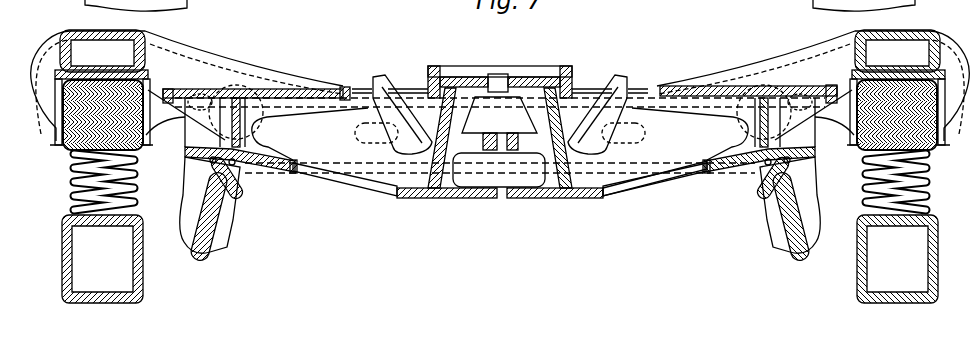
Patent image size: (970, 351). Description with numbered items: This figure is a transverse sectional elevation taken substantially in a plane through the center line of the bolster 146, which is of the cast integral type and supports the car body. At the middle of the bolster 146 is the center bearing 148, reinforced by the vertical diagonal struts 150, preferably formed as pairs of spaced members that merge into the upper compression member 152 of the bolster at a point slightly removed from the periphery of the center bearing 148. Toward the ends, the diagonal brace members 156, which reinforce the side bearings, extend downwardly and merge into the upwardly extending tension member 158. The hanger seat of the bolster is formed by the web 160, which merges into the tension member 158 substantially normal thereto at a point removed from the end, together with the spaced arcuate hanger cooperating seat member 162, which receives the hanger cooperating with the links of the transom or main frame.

The bolster 146 is at (472, 199).
The center bearing 148 is at (567, 66).
The vertical diagonal struts 150 is at (597, 190).
The upper compression member 152 is at (680, 86).
The diagonal brace members 156 is at (300, 100).
The tension member 158 is at (285, 170).
The web 160 is at (240, 195).
The arcuate hanger cooperating seat member 162 is at (228, 218).